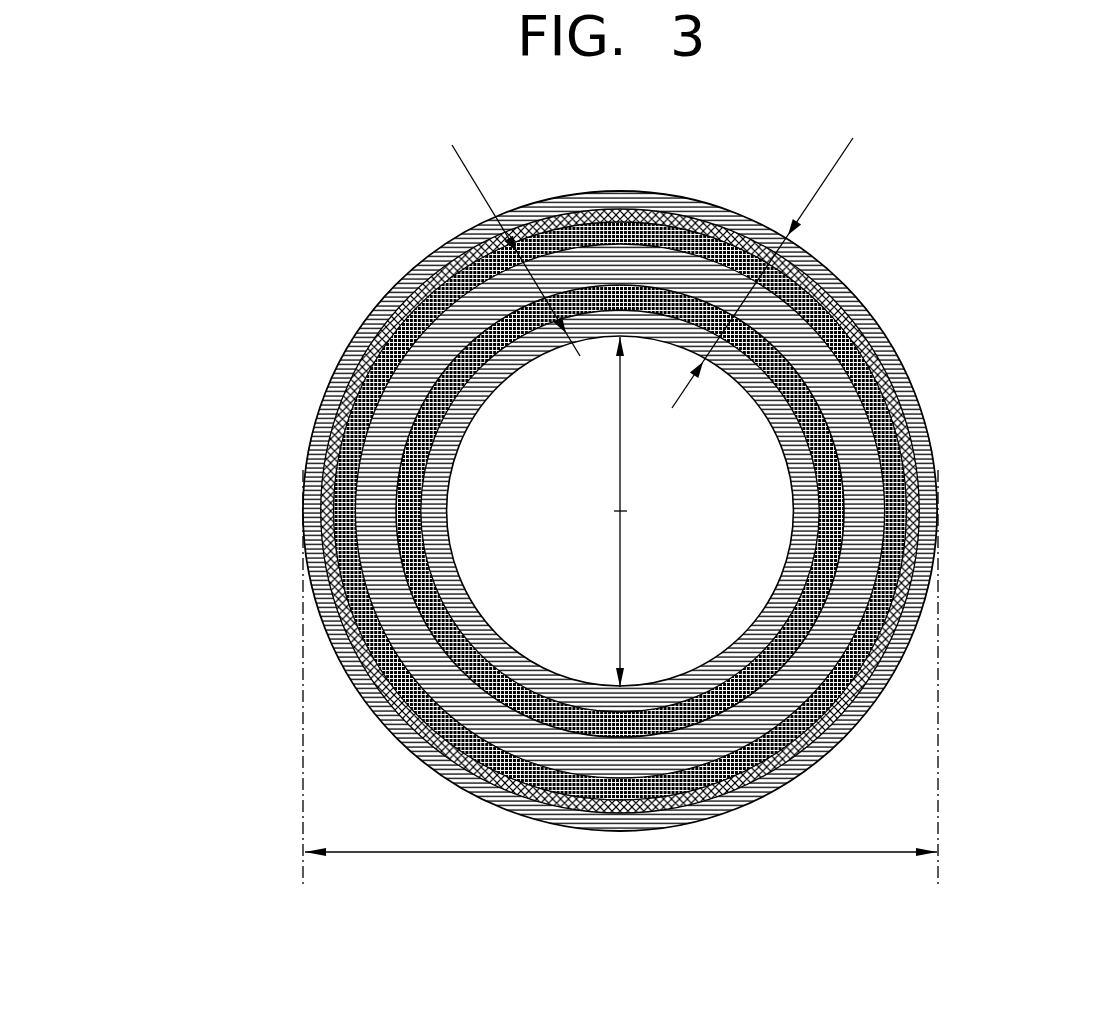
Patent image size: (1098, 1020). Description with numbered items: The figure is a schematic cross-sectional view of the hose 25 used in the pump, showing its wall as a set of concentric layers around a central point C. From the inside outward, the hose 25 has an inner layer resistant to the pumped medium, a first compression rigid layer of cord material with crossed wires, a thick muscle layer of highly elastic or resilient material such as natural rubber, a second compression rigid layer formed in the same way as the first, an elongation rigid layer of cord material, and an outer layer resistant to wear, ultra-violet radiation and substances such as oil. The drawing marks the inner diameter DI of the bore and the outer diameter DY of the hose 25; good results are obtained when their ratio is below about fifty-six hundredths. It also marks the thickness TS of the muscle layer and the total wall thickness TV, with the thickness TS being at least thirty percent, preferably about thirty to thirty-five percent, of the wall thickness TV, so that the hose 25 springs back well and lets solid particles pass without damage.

The hose 25 is at (905, 328).
The center of hose C is at (620, 511).
The inner diameter DI is at (645, 512).
The outer diameter DY is at (620, 687).
The thickness of the layer of highly elastic material TS is at (516, 243).
The wall thickness TV is at (762, 273).